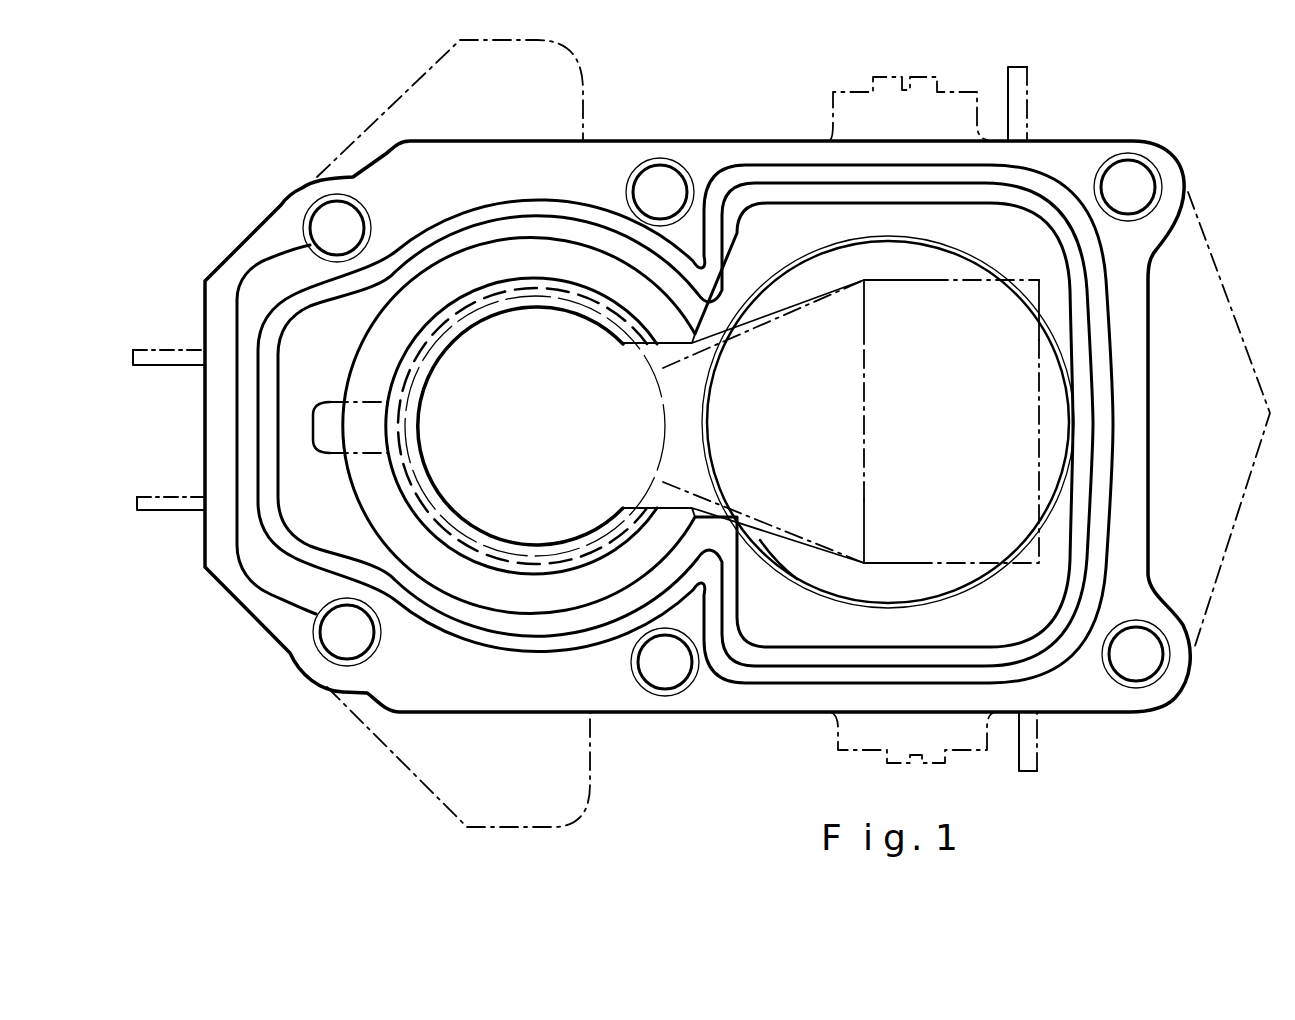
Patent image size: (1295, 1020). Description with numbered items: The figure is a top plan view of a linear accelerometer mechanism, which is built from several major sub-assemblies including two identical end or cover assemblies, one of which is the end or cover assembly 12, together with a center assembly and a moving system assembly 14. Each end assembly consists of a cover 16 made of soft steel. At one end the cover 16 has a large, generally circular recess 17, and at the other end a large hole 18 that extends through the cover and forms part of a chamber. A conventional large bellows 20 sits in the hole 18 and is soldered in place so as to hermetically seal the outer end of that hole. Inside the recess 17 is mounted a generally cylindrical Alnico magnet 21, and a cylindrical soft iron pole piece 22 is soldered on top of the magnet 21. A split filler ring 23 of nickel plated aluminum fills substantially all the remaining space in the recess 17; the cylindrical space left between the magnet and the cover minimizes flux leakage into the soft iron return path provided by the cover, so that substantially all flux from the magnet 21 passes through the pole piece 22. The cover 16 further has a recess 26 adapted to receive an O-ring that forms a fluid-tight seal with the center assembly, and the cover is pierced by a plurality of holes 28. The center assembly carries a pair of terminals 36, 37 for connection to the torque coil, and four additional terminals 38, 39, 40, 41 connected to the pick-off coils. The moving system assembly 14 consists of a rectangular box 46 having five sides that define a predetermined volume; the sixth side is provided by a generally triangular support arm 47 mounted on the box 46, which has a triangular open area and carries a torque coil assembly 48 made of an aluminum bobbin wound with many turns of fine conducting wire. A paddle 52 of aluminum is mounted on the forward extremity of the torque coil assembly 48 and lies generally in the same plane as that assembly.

The end or cover assembly 12 is at (403, 713).
The moving system assembly 14 is at (917, 279).
The cover 16 is at (717, 700).
The generally circular recess 17 is at (470, 588).
The large hole 18 is at (815, 572).
The large bellows 20 is at (918, 585).
The magnet 21 is at (296, 570).
The cylindrical pole piece 22 is at (550, 428).
The split filler ring 23 is at (537, 594).
The recess 26 is at (583, 213).
The holes 28 is at (328, 216).
The terminal 36 is at (1028, 107).
The terminal 37 is at (1038, 757).
The terminal 38 is at (148, 306).
The terminal 39 is at (125, 503).
The terminal 40 is at (169, 339).
The terminal 41 is at (171, 481).
The rectangular box 46 is at (1025, 566).
The support arm 47 is at (838, 556).
The torque coil assembly 48 is at (547, 566).
The paddle 52 is at (326, 456).